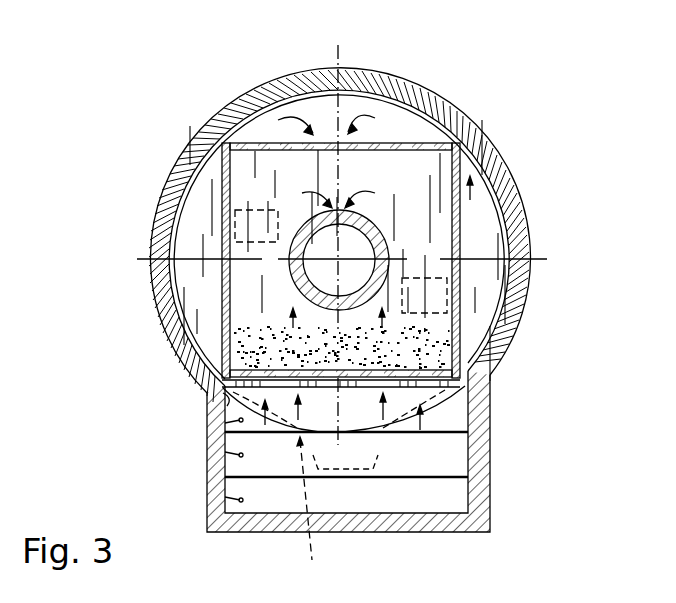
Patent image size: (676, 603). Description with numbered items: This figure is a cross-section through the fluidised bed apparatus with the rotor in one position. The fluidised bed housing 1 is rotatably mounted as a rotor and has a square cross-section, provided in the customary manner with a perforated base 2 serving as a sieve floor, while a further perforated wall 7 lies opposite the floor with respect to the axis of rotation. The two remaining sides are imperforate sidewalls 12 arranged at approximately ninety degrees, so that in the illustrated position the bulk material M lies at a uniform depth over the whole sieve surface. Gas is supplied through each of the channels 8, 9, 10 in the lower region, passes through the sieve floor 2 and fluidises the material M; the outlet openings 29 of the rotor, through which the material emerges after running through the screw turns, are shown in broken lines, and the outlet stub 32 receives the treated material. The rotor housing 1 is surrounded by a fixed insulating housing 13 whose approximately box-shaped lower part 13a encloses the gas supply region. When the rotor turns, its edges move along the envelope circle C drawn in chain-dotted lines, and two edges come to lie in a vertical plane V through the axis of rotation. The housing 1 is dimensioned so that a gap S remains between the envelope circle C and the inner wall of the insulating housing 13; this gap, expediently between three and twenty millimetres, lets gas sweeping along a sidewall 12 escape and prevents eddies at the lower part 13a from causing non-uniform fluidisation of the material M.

The fluidised bed housing 1 is at (492, 163).
The perforated base 2 is at (380, 440).
The perforated wall 7 is at (388, 138).
The channel 8 is at (207, 493).
The channel 9 is at (207, 448).
The channel 10 is at (207, 428).
The imperforate sidewall 12 is at (221, 187).
The insulating housing 13 is at (528, 298).
The lower part of insulating housing 13a is at (490, 478).
The outlet openings 29 is at (258, 243).
The outlet stub 32 is at (314, 511).
The vertical plane V is at (336, 125).
The bulk material M is at (277, 328).
The gap S is at (470, 401).
The envelope circle C is at (430, 415).